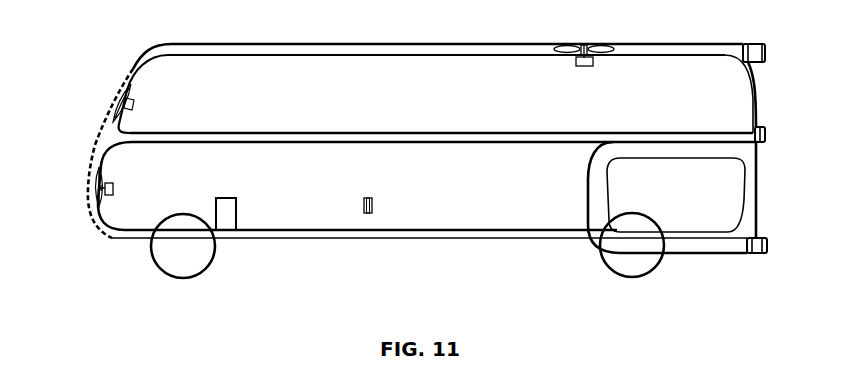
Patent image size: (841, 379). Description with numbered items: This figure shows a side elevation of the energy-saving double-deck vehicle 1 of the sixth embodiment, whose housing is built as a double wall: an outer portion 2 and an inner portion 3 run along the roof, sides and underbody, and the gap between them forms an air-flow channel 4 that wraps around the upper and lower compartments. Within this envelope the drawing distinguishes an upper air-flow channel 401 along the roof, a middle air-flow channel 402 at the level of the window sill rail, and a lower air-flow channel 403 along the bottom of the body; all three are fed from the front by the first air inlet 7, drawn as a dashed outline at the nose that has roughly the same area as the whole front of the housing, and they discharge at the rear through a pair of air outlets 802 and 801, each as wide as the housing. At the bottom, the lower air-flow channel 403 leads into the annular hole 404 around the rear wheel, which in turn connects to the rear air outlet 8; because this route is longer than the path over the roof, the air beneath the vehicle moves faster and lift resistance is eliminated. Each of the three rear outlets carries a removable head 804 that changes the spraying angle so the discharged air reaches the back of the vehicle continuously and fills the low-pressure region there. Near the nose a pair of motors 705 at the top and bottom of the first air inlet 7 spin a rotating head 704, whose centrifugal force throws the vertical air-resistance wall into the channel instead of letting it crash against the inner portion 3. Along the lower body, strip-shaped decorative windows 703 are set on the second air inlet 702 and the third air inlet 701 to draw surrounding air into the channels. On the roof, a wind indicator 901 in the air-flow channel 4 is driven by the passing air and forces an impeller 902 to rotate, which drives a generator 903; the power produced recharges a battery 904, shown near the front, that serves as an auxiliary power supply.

The vehicle body 1 is at (263, 70).
The outer portion 2 is at (273, 46).
The inner portion 3 is at (312, 54).
The air-flow channel 4 is at (338, 48).
The first air inlet 7 is at (95, 148).
The air outlet 8 is at (767, 243).
The upper air-flow channel 401 is at (437, 50).
The middle air-flow channel 402 is at (492, 138).
The lower air-flow channel 403 is at (552, 232).
The annular hole 404 is at (693, 153).
The third air inlet 701 is at (365, 212).
The second air inlet 702 is at (377, 238).
The strip-shaped decorative windows 703 is at (366, 203).
The rotating head 704 is at (100, 208).
The motors 705 is at (97, 172).
The air outlet 801 is at (767, 130).
The air outlet 802 is at (766, 50).
The removable head 804 is at (745, 45).
The wind indicator 901 is at (584, 48).
The impeller 902 is at (562, 49).
The generator 903 is at (590, 58).
The battery 904 is at (223, 213).